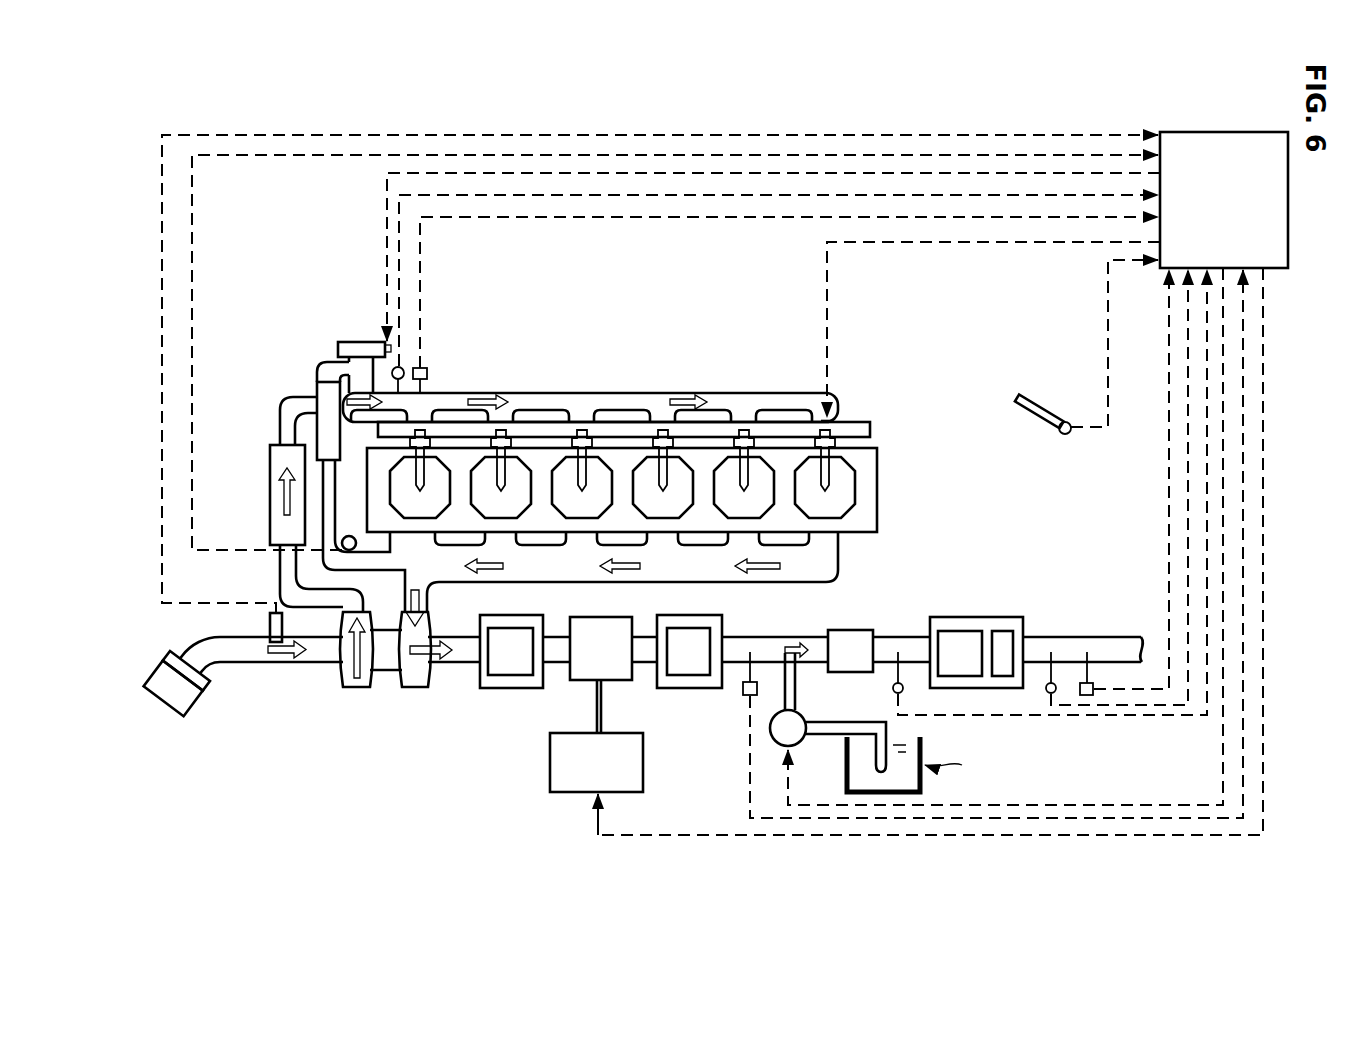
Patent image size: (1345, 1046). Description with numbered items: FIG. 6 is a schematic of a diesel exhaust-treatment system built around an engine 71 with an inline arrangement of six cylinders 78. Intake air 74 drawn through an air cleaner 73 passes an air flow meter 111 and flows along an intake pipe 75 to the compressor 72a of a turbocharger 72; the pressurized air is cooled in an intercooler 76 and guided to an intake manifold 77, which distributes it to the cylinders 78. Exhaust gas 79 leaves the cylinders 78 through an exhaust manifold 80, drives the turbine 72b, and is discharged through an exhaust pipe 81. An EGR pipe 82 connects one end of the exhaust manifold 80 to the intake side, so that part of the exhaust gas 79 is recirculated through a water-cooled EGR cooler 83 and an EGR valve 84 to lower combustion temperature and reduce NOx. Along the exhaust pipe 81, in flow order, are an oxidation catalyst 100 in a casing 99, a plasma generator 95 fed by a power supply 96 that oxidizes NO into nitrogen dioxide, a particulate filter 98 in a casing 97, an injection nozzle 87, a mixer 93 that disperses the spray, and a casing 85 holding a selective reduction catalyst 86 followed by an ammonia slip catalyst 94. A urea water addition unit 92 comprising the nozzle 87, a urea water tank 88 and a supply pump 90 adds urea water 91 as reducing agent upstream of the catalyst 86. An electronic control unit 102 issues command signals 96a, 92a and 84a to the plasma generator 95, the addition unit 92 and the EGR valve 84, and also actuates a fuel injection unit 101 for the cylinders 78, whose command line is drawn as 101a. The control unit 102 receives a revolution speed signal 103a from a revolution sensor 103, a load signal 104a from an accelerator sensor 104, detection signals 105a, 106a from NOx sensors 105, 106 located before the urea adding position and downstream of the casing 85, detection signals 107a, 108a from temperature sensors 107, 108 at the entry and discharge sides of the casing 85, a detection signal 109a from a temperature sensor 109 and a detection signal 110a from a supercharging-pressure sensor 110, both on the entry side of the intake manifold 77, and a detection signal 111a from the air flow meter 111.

The engine 71 is at (640, 378).
The turbocharger 72 is at (387, 700).
The compressor 72a is at (357, 680).
The turbine 72b is at (423, 680).
The air cleaner 73 is at (177, 698).
The intake air 74 is at (282, 662).
The intake pipe 75 is at (248, 667).
The intercooler 76 is at (270, 468).
The intake manifold 77 is at (553, 392).
The cylinders 78 is at (760, 497).
The exhaust gas 79 is at (490, 568).
The exhaust manifold 80 is at (680, 586).
The exhaust pipe 81 is at (458, 665).
The EGR pipe 82 is at (336, 512).
The EGR cooler 83 is at (322, 392).
The EGR valve 84 is at (362, 341).
The command signal 84a is at (386, 232).
The casing 85 is at (985, 617).
The selective reduction catalyst 86 is at (948, 642).
The injection nozzle 87 is at (790, 645).
The urea water tank 88 is at (847, 754).
The supply pump 90 is at (800, 712).
The urea water 91 is at (865, 773).
The urea water addition unit 92 is at (965, 765).
The command signal 92a is at (1090, 805).
The mixer 93 is at (843, 640).
The NH3 slip catalyst 94 is at (1003, 642).
The plasma generator 95 is at (585, 682).
The power supply 96 is at (565, 787).
The command signal 96a is at (728, 836).
The casing 97 is at (650, 675).
The particulate filter 98 is at (685, 662).
The casing 99 is at (507, 687).
The oxidation catalyst 100 is at (517, 658).
The fuel injection unit 101 is at (846, 410).
The sensor signal line 101a is at (827, 287).
The electronic control unit 102 is at (1246, 210).
The revolution sensor 103 is at (357, 549).
The revolution speed signal 103a is at (192, 241).
The accelerator sensor 104 is at (1033, 417).
The load signal 104a is at (1107, 352).
The NOx sensor 105 is at (742, 688).
The detection signal 105a is at (1247, 490).
The NOx sensor 106 is at (1090, 697).
The detection signal 106a is at (1169, 590).
The temperature sensor 107 is at (905, 690).
The detection signal 107a is at (1207, 518).
The temperature sensor 108 is at (1048, 694).
The detection signal 108a is at (1188, 565).
The temperature sensor 109 is at (400, 367).
The detection signal 109a is at (460, 196).
The supercharging-pressure sensor 110 is at (428, 372).
The detection signal 110a is at (668, 218).
The air flow meter 111 is at (265, 621).
The detection signal 111a is at (162, 372).